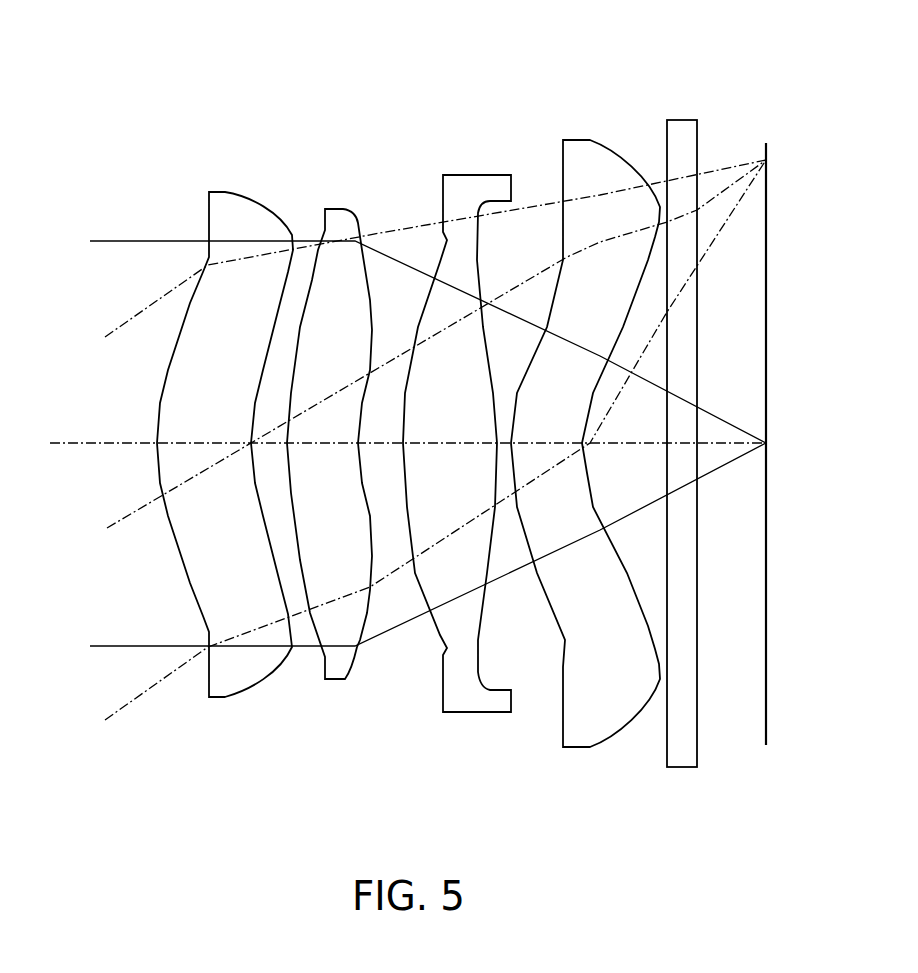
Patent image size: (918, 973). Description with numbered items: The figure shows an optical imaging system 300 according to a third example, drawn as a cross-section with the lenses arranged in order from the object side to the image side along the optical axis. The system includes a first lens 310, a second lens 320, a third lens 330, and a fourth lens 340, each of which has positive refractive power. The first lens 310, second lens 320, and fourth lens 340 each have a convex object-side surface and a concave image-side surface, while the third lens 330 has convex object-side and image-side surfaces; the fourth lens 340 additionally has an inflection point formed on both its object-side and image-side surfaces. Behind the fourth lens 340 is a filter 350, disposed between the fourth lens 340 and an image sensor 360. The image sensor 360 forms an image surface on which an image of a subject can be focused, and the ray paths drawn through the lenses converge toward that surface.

The optical imaging system 300 is at (417, 106).
The first lens 310 is at (250, 690).
The second lens 320 is at (342, 680).
The third lens 330 is at (477, 712).
The fourth lens 340 is at (590, 747).
The filter 350 is at (683, 767).
The image sensor 360 is at (766, 728).